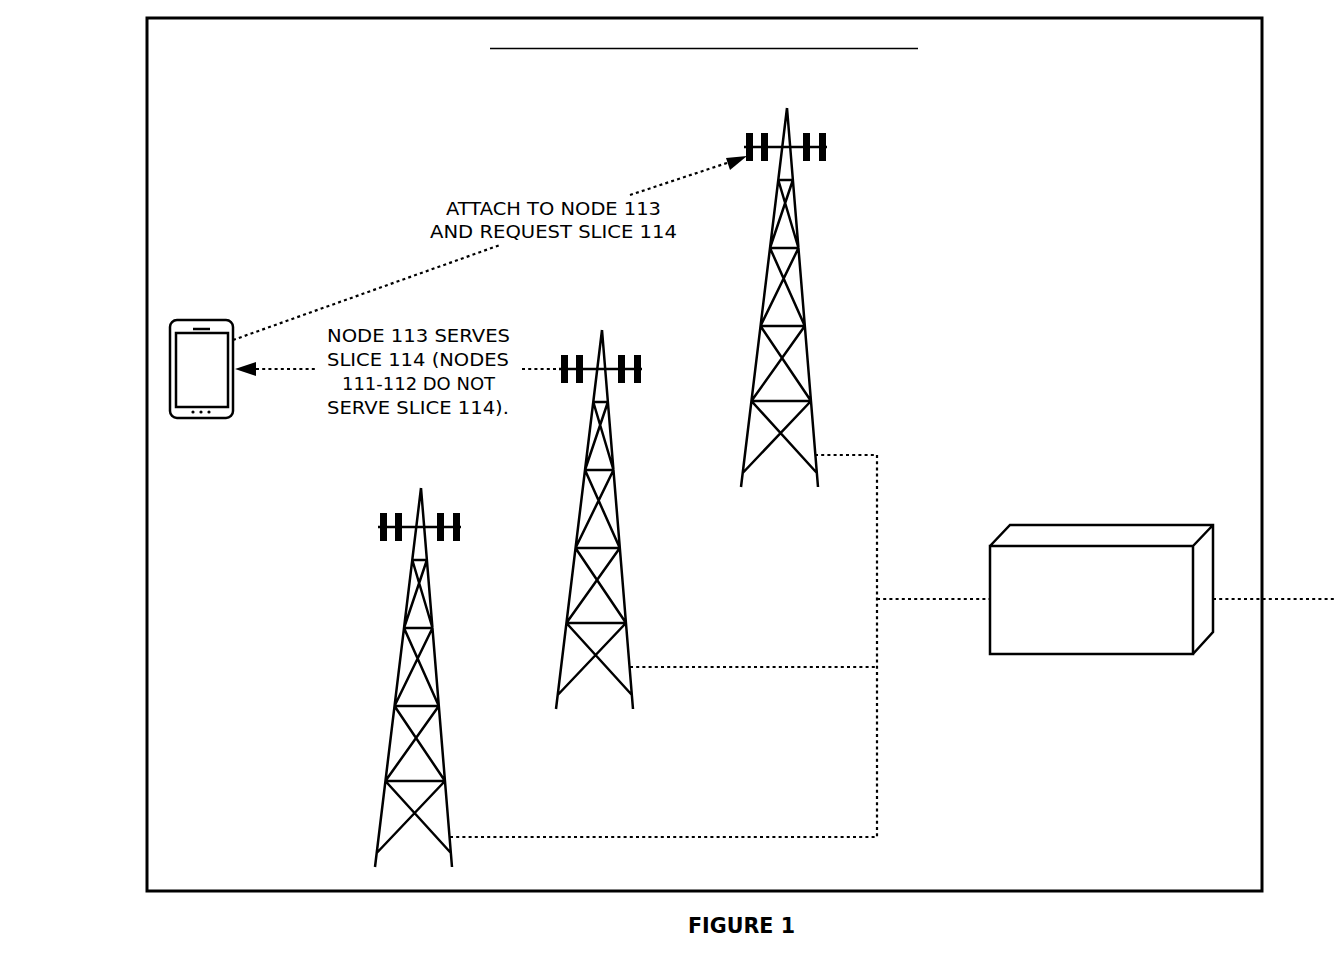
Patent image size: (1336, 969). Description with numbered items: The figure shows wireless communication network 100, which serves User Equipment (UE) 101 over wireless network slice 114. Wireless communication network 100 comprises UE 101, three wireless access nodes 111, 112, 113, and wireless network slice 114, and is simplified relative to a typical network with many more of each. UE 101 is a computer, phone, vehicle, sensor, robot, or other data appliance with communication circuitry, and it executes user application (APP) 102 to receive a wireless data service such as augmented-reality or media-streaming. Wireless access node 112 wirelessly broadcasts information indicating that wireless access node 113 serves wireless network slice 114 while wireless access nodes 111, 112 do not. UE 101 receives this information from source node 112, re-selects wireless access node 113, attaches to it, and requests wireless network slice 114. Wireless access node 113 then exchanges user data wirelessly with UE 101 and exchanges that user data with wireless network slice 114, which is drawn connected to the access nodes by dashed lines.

The wireless communication network 100 is at (704, 454).
The User Equipment (UE) 101 is at (220, 355).
The user application (APP) 102 is at (204, 371).
The wireless access node 111 is at (421, 488).
The wireless access node 112 is at (602, 330).
The wireless access node 113 is at (787, 108).
The wireless network slice 114 is at (1101, 589).